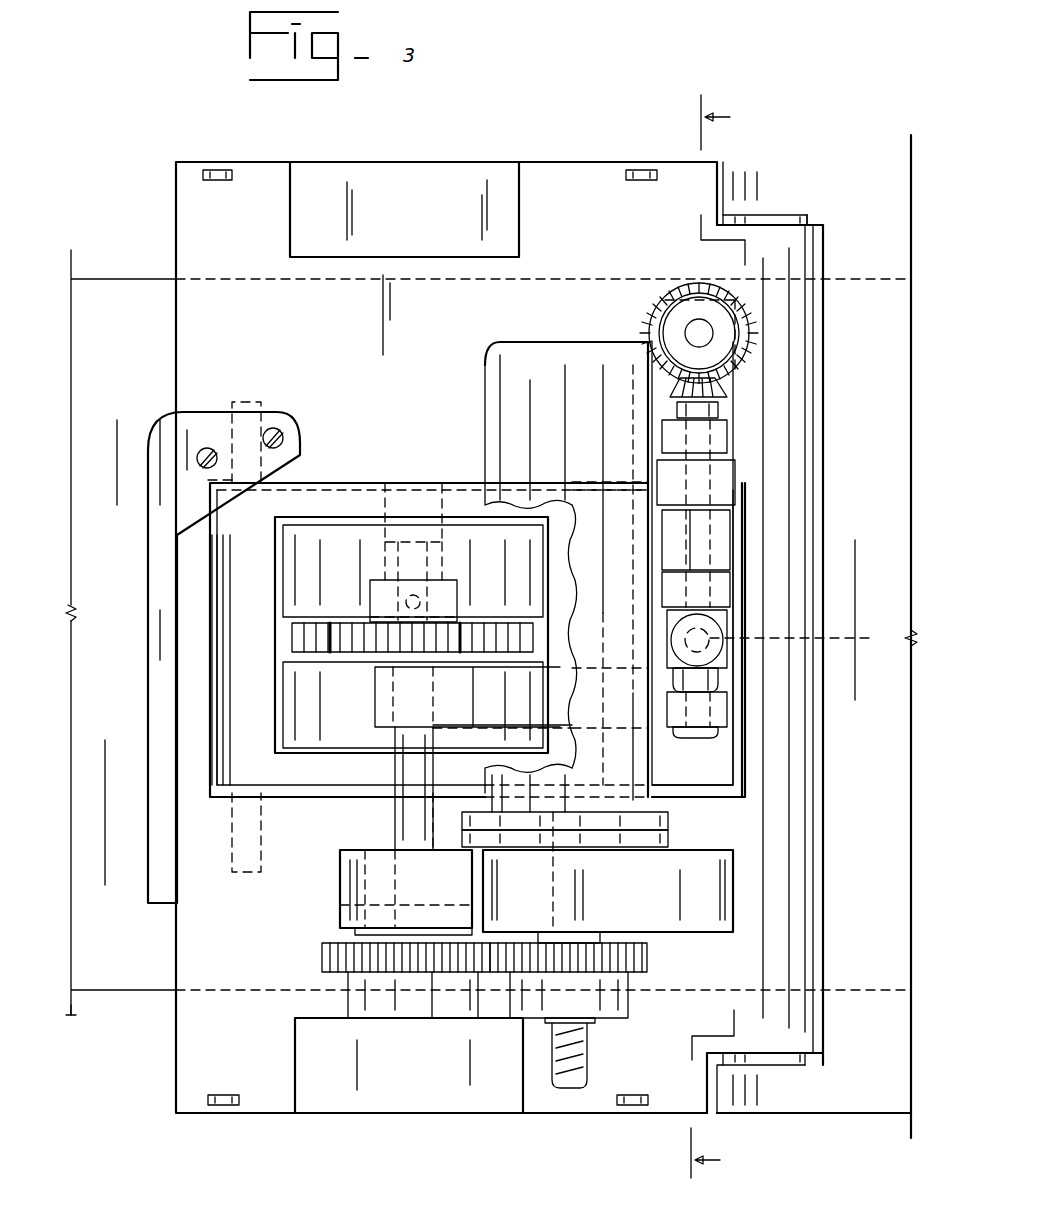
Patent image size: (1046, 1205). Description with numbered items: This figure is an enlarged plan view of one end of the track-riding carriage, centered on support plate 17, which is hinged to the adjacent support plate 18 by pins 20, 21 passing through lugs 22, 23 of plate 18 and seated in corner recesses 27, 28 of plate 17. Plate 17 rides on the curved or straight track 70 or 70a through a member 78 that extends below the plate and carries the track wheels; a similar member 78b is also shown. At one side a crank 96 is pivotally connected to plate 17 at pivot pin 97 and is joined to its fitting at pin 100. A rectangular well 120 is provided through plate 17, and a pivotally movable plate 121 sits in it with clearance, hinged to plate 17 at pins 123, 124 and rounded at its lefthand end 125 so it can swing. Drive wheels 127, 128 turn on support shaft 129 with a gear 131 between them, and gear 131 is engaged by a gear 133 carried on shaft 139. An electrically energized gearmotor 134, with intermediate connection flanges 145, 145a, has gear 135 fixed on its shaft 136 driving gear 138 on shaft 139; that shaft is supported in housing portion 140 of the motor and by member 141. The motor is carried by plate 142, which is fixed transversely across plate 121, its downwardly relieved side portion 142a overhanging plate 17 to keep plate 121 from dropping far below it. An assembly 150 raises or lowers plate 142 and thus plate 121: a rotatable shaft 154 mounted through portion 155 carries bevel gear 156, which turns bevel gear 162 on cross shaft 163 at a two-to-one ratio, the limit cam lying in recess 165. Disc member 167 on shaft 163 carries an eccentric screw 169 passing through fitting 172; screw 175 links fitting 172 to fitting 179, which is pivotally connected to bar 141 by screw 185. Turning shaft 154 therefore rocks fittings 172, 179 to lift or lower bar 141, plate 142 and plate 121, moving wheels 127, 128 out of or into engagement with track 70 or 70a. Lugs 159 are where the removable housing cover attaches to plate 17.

The support plate 17 is at (176, 218).
The support plate 18 is at (876, 702).
The pin 20 is at (806, 1060).
The pin 21 is at (812, 222).
The lug 22 is at (775, 1118).
The lug 23 is at (757, 162).
The corner recess 27 is at (775, 1060).
The corner recess 28 is at (780, 215).
The track 70 or 70a is at (132, 1021).
The member 78 is at (418, 1079).
The block 78b is at (404, 162).
The crank 96 is at (148, 602).
The pivot pin 97 is at (200, 464).
The pin 100 is at (283, 443).
The well 120 is at (408, 470).
The pivotally movable plate 121 is at (356, 482).
The pin 123 is at (232, 855).
The pin 124 is at (261, 402).
The lefthand end 125 is at (217, 725).
The drive wheel 127 is at (332, 752).
The drive wheel 128 is at (350, 525).
The support shaft 129 is at (428, 482).
The gear 131 is at (292, 637).
The gear 133 is at (470, 653).
The gearmotor 134 is at (485, 803).
The gear 135 is at (647, 960).
The shaft 136 is at (600, 937).
The gear 138 is at (322, 960).
The shaft 139 is at (360, 932).
The housing portion 140 is at (340, 891).
The member 141 is at (375, 698).
The plate 142 is at (671, 569).
The relieved side portion 142a is at (652, 803).
The connection flange 145 is at (670, 840).
The connection flange 145a is at (670, 825).
The assembly 150 is at (690, 278).
The rotatable shaft 154 is at (686, 333).
The portion 155 is at (662, 535).
The bevel gear 156 is at (665, 310).
The lug 159 is at (636, 1108).
The bevel gear 162 is at (680, 392).
The cross shaft 163 is at (686, 545).
The recess 165 is at (662, 452).
The member 167 is at (662, 592).
The screw 169 is at (673, 680).
The fitting 172 is at (667, 658).
The screw 175 is at (790, 637).
The fitting 179 is at (672, 626).
The screw 185 is at (688, 742).